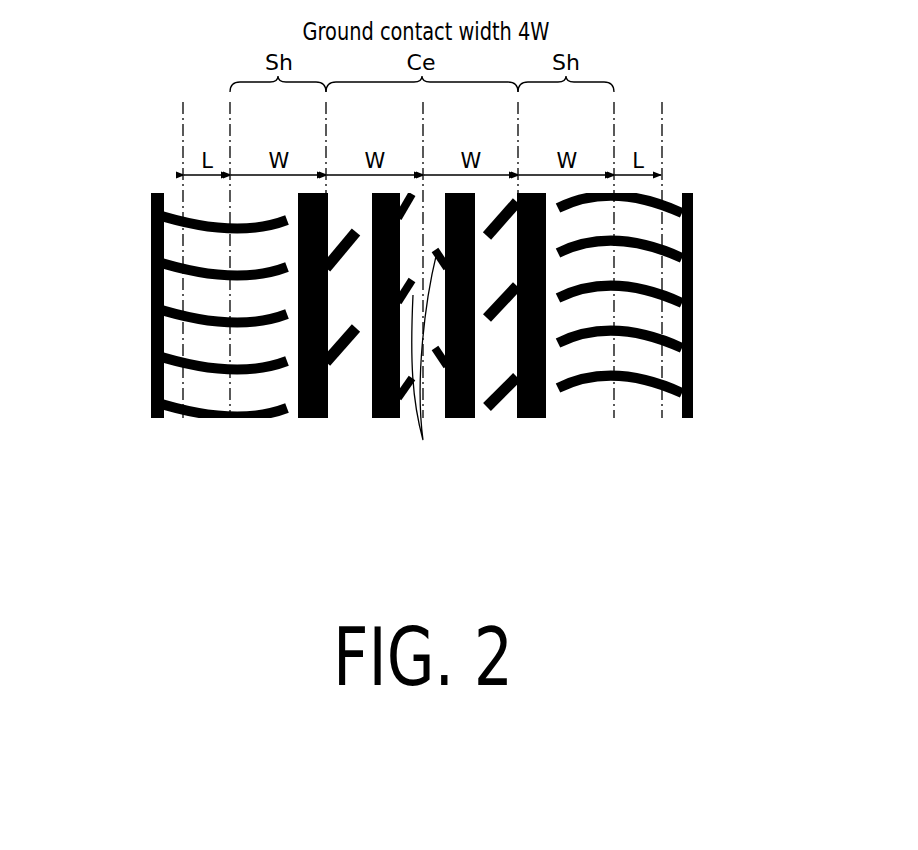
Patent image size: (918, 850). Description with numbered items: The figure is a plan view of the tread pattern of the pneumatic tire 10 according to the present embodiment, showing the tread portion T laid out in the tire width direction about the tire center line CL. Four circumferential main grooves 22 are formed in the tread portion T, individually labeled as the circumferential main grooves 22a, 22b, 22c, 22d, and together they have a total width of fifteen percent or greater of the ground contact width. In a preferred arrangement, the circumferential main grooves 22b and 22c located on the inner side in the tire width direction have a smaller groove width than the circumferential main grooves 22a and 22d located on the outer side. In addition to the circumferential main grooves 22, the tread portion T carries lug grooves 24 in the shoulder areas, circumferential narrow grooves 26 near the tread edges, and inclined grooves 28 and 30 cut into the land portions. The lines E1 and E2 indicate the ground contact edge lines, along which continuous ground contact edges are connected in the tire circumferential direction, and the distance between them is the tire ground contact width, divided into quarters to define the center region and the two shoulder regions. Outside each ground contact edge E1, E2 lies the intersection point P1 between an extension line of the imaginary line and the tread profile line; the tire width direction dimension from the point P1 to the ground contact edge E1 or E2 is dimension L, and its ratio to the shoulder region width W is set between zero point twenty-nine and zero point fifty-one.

The pneumatic tire 10 is at (694, 95).
The tread portion T is at (156, 93).
The circumferential main grooves 22 is at (422, 305).
The circumferential main groove 22a is at (313, 305).
The circumferential main groove 22b is at (386, 305).
The circumferential main groove 22c is at (460, 305).
The circumferential main groove 22d is at (531, 305).
The lug grooves 24 is at (417, 306).
The circumferential narrow grooves 26 is at (422, 305).
The inclined grooves 28 is at (421, 300).
The inclined grooves 30 is at (423, 440).
The intersection point P1 is at (183, 138).
The ground contact edge E1 is at (230, 137).
The ground contact edge E2 is at (614, 137).
The tire center line CL is at (423, 137).